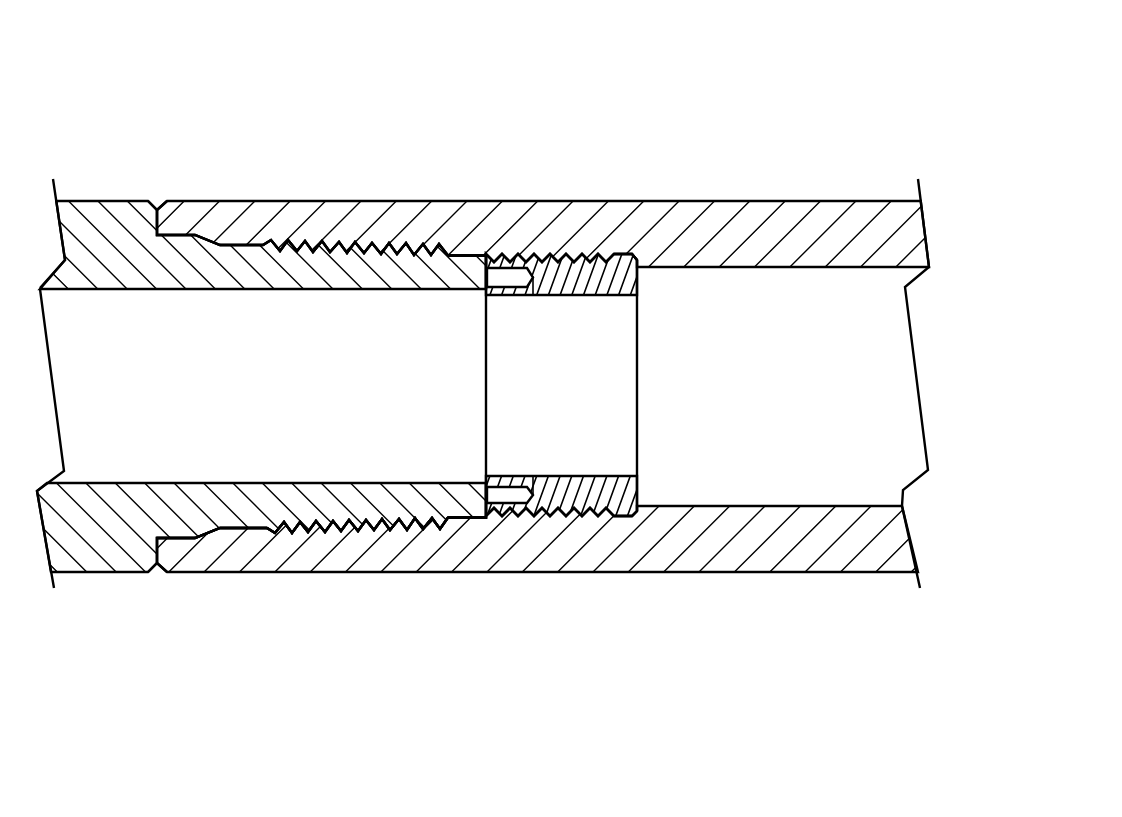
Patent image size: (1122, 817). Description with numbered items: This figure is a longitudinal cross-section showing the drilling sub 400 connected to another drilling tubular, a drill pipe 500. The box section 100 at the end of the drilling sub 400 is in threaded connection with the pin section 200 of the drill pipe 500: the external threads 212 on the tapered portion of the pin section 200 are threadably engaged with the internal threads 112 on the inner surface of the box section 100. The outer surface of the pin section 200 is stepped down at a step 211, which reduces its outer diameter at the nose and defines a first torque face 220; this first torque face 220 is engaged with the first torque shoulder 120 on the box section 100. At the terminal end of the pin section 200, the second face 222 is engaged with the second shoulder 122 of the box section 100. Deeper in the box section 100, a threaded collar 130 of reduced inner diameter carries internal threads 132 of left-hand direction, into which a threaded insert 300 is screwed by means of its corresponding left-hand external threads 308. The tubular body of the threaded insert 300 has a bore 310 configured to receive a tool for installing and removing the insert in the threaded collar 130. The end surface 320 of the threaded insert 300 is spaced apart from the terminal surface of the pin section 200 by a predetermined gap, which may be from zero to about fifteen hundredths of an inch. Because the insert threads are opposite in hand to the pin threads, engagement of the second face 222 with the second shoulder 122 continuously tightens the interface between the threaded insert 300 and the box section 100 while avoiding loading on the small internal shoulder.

The box section 100 is at (400, 194).
The internal threads 112 is at (338, 529).
The first torque shoulder 120 is at (214, 536).
The second shoulder 122 is at (488, 519).
The threaded collar 130 is at (623, 550).
The internal threads of threaded collar 132 is at (607, 512).
The pin section 200 is at (262, 512).
The step 211 is at (487, 254).
The external threads 212 is at (290, 523).
The first torque face 220 is at (213, 533).
The second face 222 is at (476, 500).
The threaded insert 300 is at (625, 262).
The external threads of threaded insert 308 is at (572, 510).
The bore 310 is at (513, 290).
The end surface of threaded insert 320 is at (503, 290).
The drilling sub 400 is at (750, 101).
The drill pipe 500 is at (90, 174).